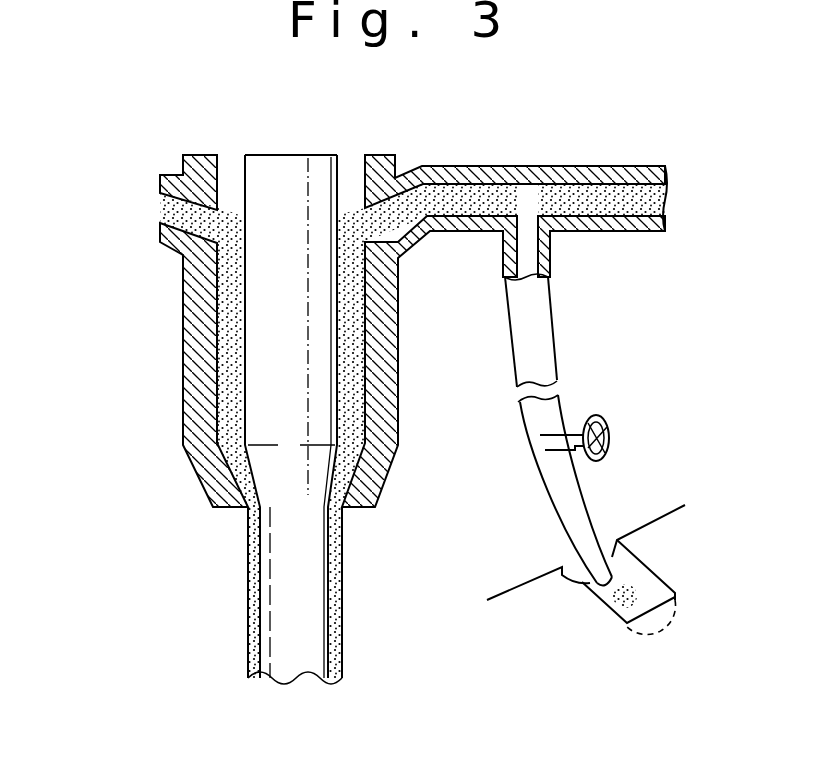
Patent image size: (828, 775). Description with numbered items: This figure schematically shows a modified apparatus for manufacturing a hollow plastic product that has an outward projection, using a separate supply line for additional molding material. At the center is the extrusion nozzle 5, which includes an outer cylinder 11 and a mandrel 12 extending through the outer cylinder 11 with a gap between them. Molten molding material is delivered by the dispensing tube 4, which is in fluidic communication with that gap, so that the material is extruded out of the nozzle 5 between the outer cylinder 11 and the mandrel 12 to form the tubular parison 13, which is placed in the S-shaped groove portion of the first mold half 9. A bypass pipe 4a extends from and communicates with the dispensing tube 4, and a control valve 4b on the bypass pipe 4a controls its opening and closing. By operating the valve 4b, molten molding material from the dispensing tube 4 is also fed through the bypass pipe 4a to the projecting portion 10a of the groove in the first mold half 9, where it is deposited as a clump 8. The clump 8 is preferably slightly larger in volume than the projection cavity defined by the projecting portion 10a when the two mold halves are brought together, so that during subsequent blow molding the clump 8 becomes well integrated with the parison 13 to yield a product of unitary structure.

The extrusion nozzle 5 is at (152, 373).
The outer cylinder 11 is at (188, 438).
The mandrel 12 is at (313, 155).
The parison 13 is at (340, 595).
The dispensing tube 4 is at (633, 166).
The bypass pipe 4a is at (555, 348).
The control valve 4b is at (605, 424).
The clump of molten molding material 8 is at (503, 163).
The first mold half 9 is at (657, 518).
The projecting portion 10a is at (660, 581).